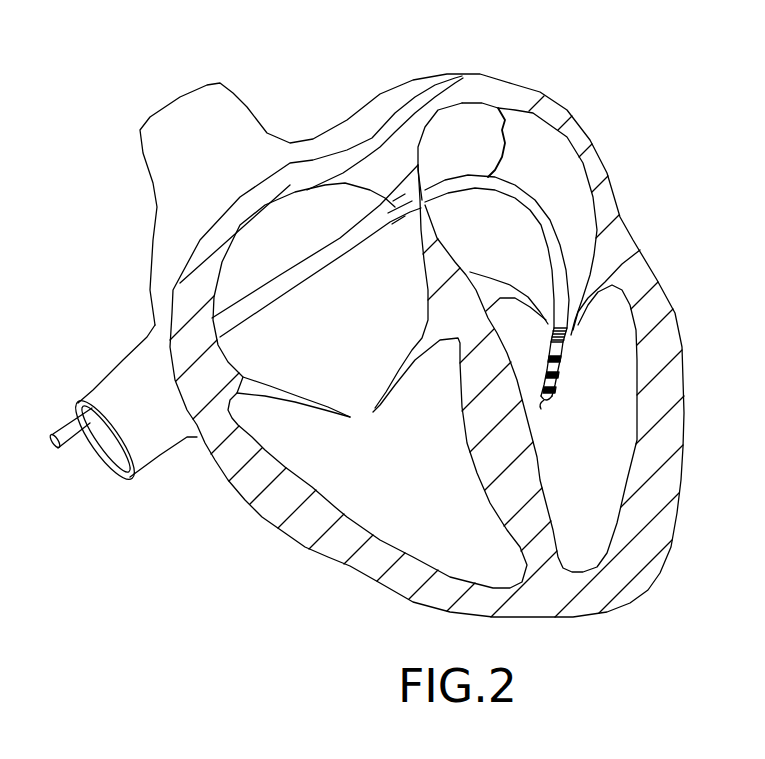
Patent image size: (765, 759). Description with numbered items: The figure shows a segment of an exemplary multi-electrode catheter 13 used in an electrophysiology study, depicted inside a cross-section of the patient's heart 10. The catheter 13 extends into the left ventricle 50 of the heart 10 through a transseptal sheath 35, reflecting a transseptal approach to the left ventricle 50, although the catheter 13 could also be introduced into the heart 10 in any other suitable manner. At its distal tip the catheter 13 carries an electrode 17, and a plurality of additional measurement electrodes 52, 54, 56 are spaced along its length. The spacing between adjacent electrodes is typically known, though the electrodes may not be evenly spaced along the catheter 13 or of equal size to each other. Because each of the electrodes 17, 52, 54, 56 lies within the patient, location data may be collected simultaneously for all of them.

The heart 10 is at (375, 329).
The transseptal sheath 35 is at (308, 244).
The left ventricle 50 is at (560, 388).
The measurement electrode 56 is at (584, 349).
The measurement electrode 54 is at (581, 375).
The measurement electrode 52 is at (575, 400).
The multi-electrode catheter 13 is at (576, 417).
The electrode 17 is at (561, 425).